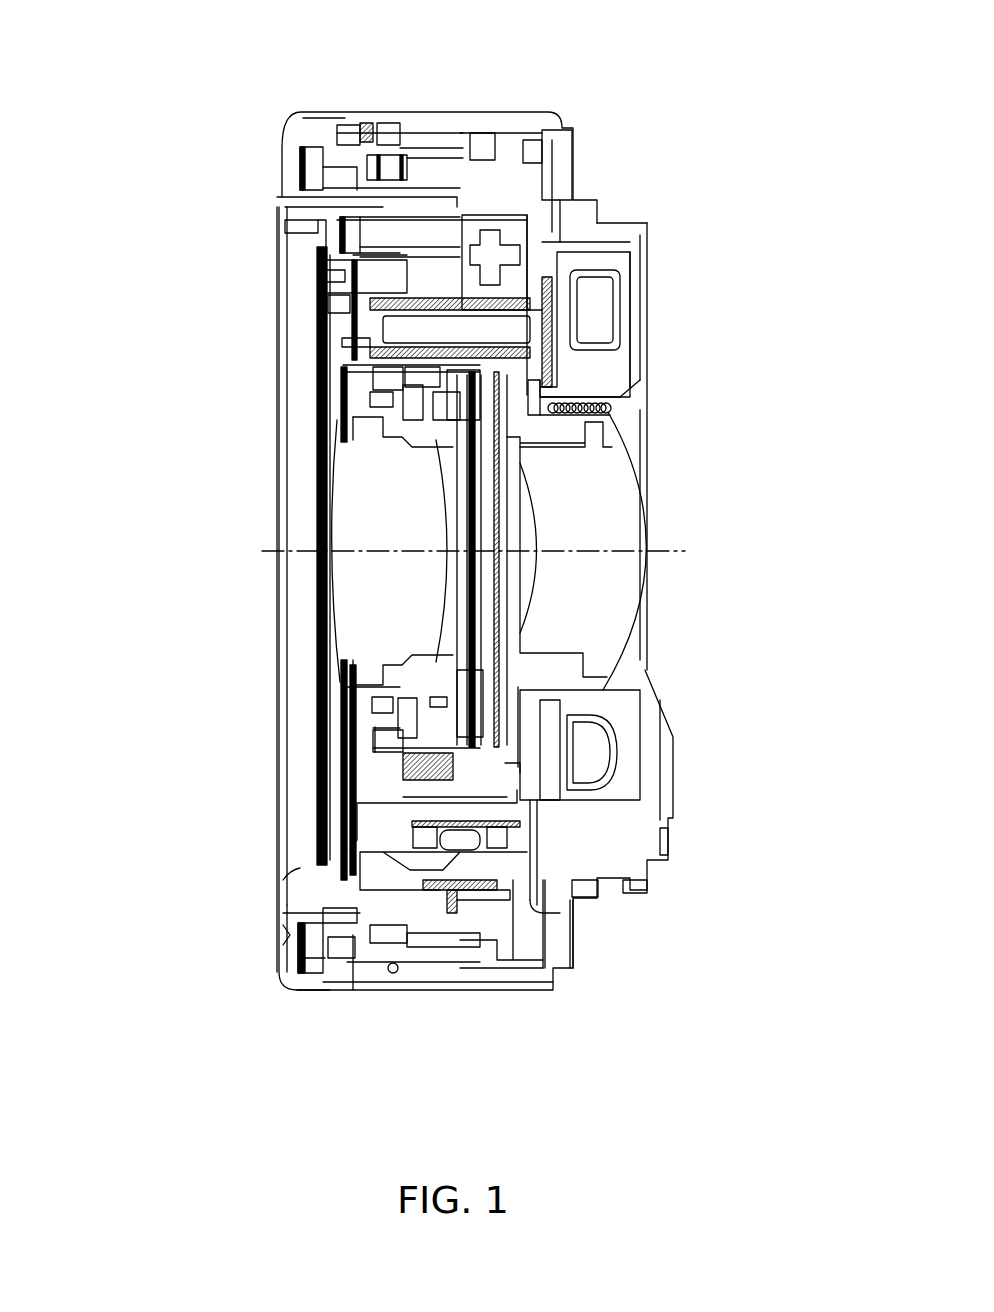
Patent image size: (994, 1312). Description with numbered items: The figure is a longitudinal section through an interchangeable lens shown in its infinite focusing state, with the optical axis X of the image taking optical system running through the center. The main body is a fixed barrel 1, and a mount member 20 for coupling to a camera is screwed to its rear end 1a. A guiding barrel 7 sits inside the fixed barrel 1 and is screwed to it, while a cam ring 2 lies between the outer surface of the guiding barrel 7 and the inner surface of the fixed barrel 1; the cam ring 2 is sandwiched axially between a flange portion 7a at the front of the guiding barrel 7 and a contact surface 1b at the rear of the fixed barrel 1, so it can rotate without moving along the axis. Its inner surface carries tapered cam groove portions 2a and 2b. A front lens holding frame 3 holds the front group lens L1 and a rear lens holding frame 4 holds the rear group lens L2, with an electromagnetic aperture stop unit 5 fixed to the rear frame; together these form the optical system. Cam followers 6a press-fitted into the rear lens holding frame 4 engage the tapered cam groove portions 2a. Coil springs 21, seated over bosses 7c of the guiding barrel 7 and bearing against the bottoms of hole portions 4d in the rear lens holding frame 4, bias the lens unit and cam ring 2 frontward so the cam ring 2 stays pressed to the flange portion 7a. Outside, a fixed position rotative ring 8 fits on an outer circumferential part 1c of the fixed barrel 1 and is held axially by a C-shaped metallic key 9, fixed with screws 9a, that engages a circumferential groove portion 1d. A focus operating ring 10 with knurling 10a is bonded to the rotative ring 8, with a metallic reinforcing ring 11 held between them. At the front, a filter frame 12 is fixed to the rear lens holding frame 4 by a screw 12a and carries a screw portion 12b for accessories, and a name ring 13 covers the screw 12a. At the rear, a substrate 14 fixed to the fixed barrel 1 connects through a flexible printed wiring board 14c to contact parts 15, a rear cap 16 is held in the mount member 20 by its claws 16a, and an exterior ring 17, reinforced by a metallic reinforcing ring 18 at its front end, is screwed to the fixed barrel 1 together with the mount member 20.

The fixed barrel 1 is at (482, 173).
The rear end 1a is at (527, 200).
The contact surface 1b is at (510, 897).
The outer circumferential part 1c is at (350, 985).
The circumferential groove portion 1d is at (455, 990).
The cam ring 2 is at (495, 147).
The tapered cam groove portion 2a is at (543, 173).
The tapered cam groove portion 2b is at (285, 208).
The front lens holding frame 3 is at (413, 660).
The rear lens holding frame 4 is at (560, 653).
The hole portion 4d is at (617, 432).
The electromagnetic aperture stop unit 5 is at (488, 627).
The cam follower 6a is at (464, 232).
The guiding barrel 7 is at (543, 913).
The flange portion 7a is at (353, 853).
The boss 7c is at (317, 350).
The fixed position rotative ring 8 is at (300, 140).
The metallic key 9 is at (380, 945).
The screw 9a is at (388, 155).
The focus operating ring 10 is at (300, 960).
The knurling 10a is at (318, 993).
The metallic reinforcing ring 11 is at (285, 935).
The filter frame 12 is at (278, 340).
The screw 12a is at (320, 275).
The screw portion 12b is at (300, 868).
The name ring 13 is at (315, 800).
The substrate 14 is at (437, 313).
The flexible printed wiring board 14c is at (615, 752).
The contact part 15 is at (672, 845).
The rear cap 16 is at (675, 795).
The claw 16a is at (578, 243).
The exterior ring 17 is at (440, 110).
The metallic reinforcing ring 18 is at (362, 122).
The mount member 20 is at (620, 213).
The coil spring 21 is at (633, 350).
The front group lens L1 is at (340, 475).
The rear group lens L2 is at (635, 483).
The optical axis X is at (456, 559).